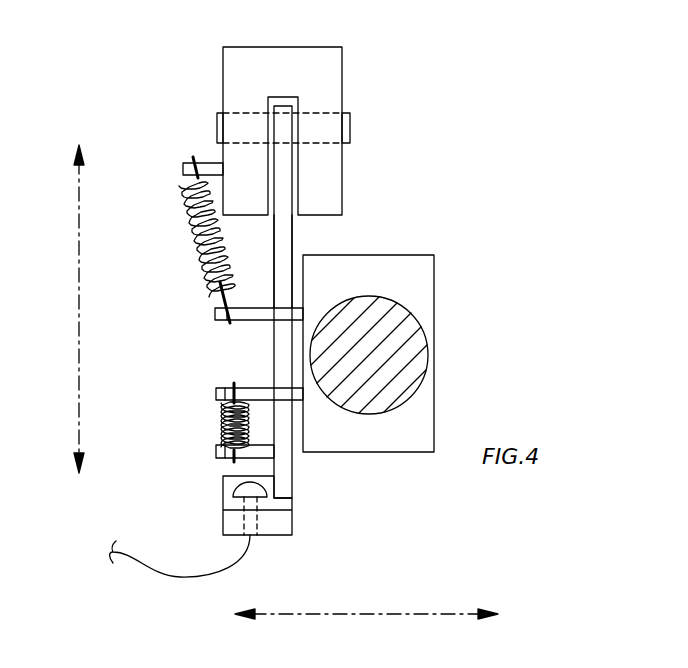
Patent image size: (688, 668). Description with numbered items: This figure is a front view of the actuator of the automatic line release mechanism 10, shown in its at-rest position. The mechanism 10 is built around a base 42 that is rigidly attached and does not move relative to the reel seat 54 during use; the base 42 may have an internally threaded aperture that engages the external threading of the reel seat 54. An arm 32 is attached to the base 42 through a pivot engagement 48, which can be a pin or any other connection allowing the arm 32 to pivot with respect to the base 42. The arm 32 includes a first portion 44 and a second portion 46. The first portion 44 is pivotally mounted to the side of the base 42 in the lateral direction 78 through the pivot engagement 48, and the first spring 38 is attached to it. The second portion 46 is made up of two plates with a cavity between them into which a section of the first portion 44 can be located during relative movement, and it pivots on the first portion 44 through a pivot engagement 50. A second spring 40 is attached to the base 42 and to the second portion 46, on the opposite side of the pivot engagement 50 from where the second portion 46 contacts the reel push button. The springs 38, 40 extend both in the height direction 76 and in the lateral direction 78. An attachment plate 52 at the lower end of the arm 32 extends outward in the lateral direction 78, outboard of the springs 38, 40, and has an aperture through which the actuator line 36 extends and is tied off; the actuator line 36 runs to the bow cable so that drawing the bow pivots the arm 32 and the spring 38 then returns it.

The automatic line release mechanism 10 is at (480, 200).
The arm 32 is at (287, 228).
The actuator line 36 is at (158, 562).
The first spring 38 is at (220, 425).
The second spring 40 is at (193, 202).
The base 42 is at (420, 287).
The first portion 44 is at (282, 257).
The second portion 46 is at (328, 62).
The pivot engagement 48 is at (217, 313).
The pivot engagement 50 is at (350, 128).
The attachment plate 52 is at (283, 522).
The reel seat 54 is at (418, 347).
The height direction 76 is at (78, 250).
The lateral direction 78 is at (376, 612).